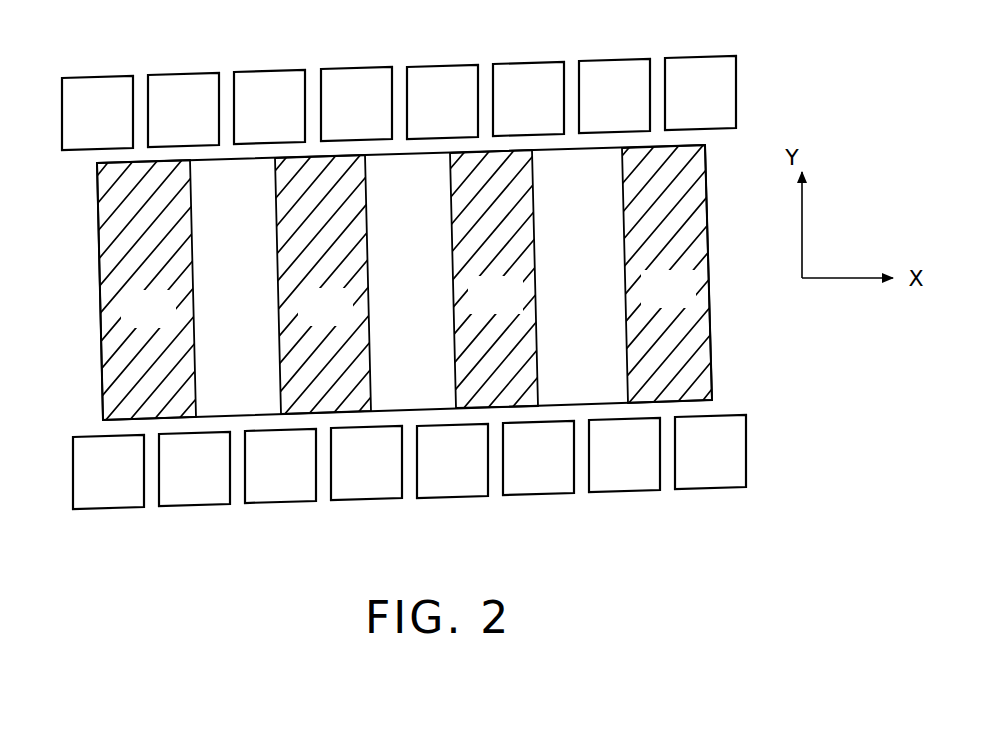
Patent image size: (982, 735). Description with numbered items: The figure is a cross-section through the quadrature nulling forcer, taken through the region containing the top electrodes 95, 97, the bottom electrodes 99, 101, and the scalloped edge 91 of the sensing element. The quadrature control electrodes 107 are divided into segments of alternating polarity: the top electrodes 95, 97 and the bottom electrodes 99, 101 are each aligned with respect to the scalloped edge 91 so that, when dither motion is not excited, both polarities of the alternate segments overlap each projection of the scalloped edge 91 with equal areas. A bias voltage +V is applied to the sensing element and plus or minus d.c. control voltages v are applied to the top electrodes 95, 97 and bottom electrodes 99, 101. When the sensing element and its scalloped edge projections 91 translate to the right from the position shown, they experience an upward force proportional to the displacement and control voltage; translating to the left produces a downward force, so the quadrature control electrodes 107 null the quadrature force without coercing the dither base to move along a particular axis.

The scalloped edge 91 is at (102, 375).
The top electrode 95 is at (95, 78).
The top electrode 97 is at (175, 75).
The bottom electrode 99 is at (112, 509).
The bottom electrode 101 is at (198, 506).
The quadrature control electrodes 107 is at (757, 147).